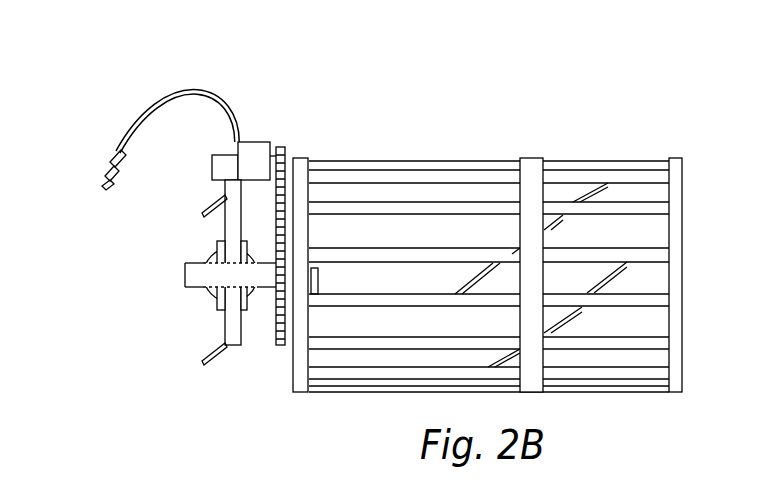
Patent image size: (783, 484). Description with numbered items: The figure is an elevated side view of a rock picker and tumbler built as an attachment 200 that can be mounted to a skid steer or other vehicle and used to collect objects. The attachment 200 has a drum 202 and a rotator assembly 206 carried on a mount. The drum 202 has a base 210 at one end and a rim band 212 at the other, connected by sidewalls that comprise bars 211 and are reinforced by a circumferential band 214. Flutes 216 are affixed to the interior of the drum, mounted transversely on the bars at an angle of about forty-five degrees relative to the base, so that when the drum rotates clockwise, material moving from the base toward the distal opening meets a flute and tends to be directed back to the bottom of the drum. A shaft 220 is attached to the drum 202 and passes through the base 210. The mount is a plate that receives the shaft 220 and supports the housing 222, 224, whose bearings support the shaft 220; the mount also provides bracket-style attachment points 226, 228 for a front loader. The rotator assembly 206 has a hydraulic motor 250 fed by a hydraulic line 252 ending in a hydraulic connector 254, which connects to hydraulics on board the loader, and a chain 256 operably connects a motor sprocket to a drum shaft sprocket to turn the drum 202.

The attachment 200 is at (745, 110).
The drum 202 is at (470, 195).
The rotator assembly 206 is at (265, 90).
The base 210 is at (302, 380).
The bars 211 is at (603, 373).
The rim band 212 is at (675, 208).
The circumferential band 214 is at (531, 175).
The flutes 216 is at (583, 196).
The shaft 220 is at (192, 277).
The housing 222 is at (258, 292).
The housing 224 is at (205, 296).
The bracket-style attachment point 226 is at (222, 358).
The bracket-style attachment point 228 is at (202, 213).
The hydraulic motor 250 is at (247, 155).
The hydraulic line 252 is at (150, 110).
The hydraulic connector 254 is at (112, 155).
The chain 256 is at (285, 160).